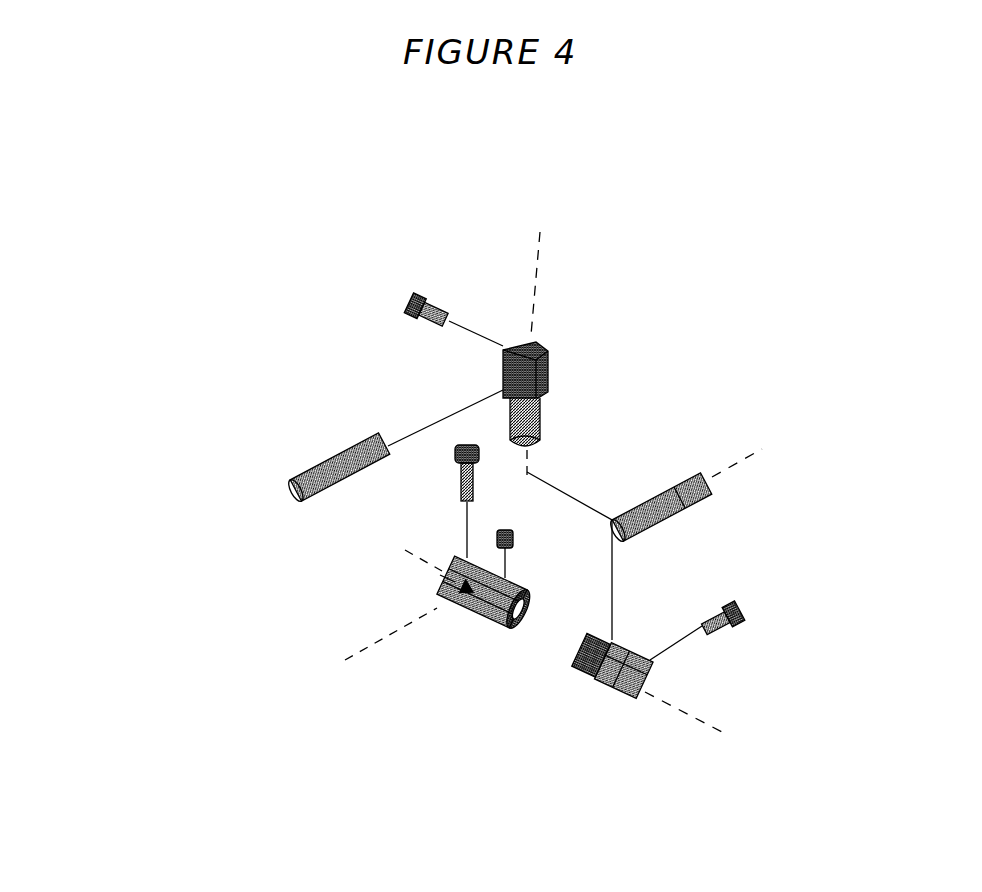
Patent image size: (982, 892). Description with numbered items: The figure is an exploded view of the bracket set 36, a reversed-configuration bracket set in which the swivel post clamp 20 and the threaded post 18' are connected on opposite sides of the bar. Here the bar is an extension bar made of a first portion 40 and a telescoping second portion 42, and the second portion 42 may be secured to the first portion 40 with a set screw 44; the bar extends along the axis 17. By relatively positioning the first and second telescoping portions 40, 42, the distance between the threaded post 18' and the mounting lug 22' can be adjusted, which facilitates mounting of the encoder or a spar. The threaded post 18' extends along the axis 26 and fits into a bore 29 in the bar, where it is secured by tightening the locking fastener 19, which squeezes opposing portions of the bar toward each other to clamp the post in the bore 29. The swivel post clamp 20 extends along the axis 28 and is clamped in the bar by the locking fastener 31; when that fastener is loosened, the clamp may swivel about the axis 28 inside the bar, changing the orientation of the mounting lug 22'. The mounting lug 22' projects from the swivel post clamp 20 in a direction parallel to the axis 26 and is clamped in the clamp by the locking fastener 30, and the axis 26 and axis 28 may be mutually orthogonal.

The bracket set 36 is at (268, 253).
The swivel post clamp 20 is at (540, 340).
The axis 28 is at (538, 265).
The locking fastener 30 is at (430, 298).
The mounting lug 22' is at (308, 433).
The threaded post 18' is at (735, 414).
The axis 26 is at (778, 444).
The locking fastener 19 is at (446, 478).
The bore 29 is at (455, 603).
The first portion 40 is at (490, 607).
The set screw 44 is at (465, 607).
The second portion 42 is at (620, 692).
The locking fastener 31 is at (745, 625).
The axis 17 is at (722, 738).